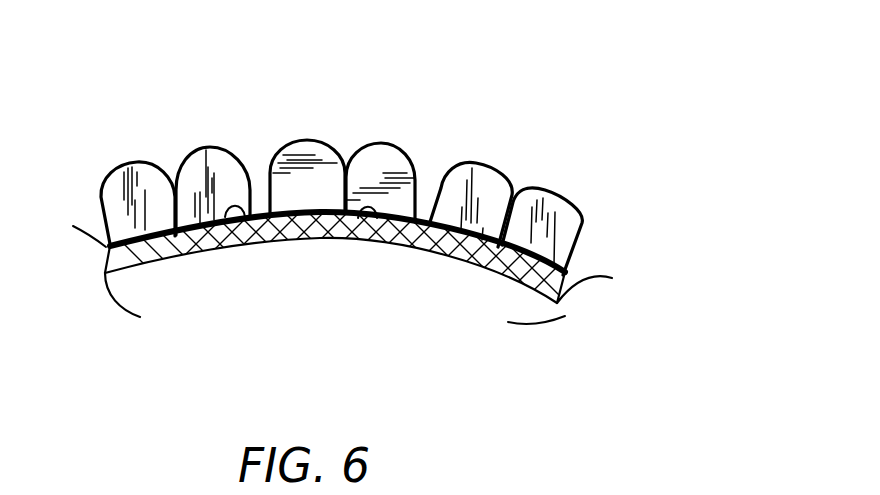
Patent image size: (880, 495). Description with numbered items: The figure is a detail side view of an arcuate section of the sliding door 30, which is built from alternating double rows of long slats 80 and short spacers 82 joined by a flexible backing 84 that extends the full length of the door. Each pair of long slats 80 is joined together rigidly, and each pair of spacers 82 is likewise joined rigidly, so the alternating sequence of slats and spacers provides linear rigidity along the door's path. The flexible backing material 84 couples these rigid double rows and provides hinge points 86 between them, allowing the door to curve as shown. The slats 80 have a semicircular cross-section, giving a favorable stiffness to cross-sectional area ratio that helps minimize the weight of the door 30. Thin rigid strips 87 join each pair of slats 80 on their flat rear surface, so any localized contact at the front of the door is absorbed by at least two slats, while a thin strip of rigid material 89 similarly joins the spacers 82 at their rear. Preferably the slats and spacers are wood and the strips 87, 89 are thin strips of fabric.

The sliding door 30 is at (555, 127).
The long slats 80 is at (112, 183).
The short spacers 82 is at (307, 143).
The flexible backing 84 is at (178, 255).
The hinge points 86 is at (252, 180).
The thin rigid strips 87 is at (219, 255).
The thin strip of rigid material 89 is at (350, 218).